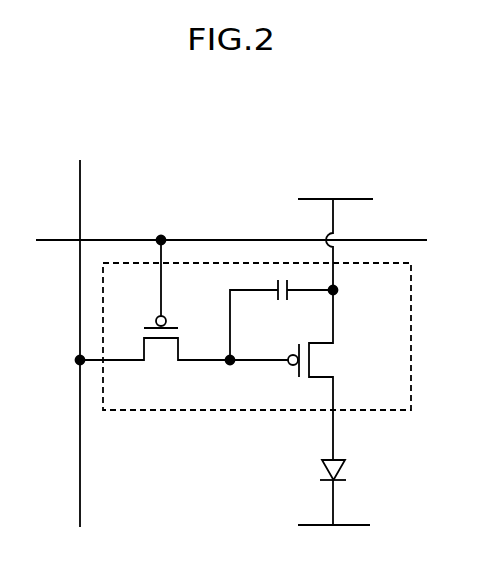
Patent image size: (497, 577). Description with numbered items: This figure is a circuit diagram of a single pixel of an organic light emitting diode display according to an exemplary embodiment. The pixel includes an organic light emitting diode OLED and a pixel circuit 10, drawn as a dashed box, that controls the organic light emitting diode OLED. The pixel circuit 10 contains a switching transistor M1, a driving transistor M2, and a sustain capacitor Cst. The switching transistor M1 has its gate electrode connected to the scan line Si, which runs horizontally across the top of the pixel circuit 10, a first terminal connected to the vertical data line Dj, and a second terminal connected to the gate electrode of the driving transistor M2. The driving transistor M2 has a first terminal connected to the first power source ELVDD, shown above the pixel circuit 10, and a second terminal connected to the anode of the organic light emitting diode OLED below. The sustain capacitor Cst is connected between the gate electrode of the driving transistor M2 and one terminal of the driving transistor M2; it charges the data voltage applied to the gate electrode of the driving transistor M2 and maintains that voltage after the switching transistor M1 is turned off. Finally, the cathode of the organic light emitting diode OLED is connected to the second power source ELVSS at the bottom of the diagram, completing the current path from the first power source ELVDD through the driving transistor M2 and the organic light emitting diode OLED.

The pixel circuit 10 is at (411, 298).
The switching transistor M1 is at (155, 315).
The driving transistor M2 is at (301, 375).
The sustain capacitor Cst is at (281, 320).
The organic light emitting diode OLED is at (365, 484).
The first power source ELVDD is at (335, 230).
The second power source ELVSS is at (334, 541).
The data line Dj is at (77, 330).
The scan line Si is at (221, 240).